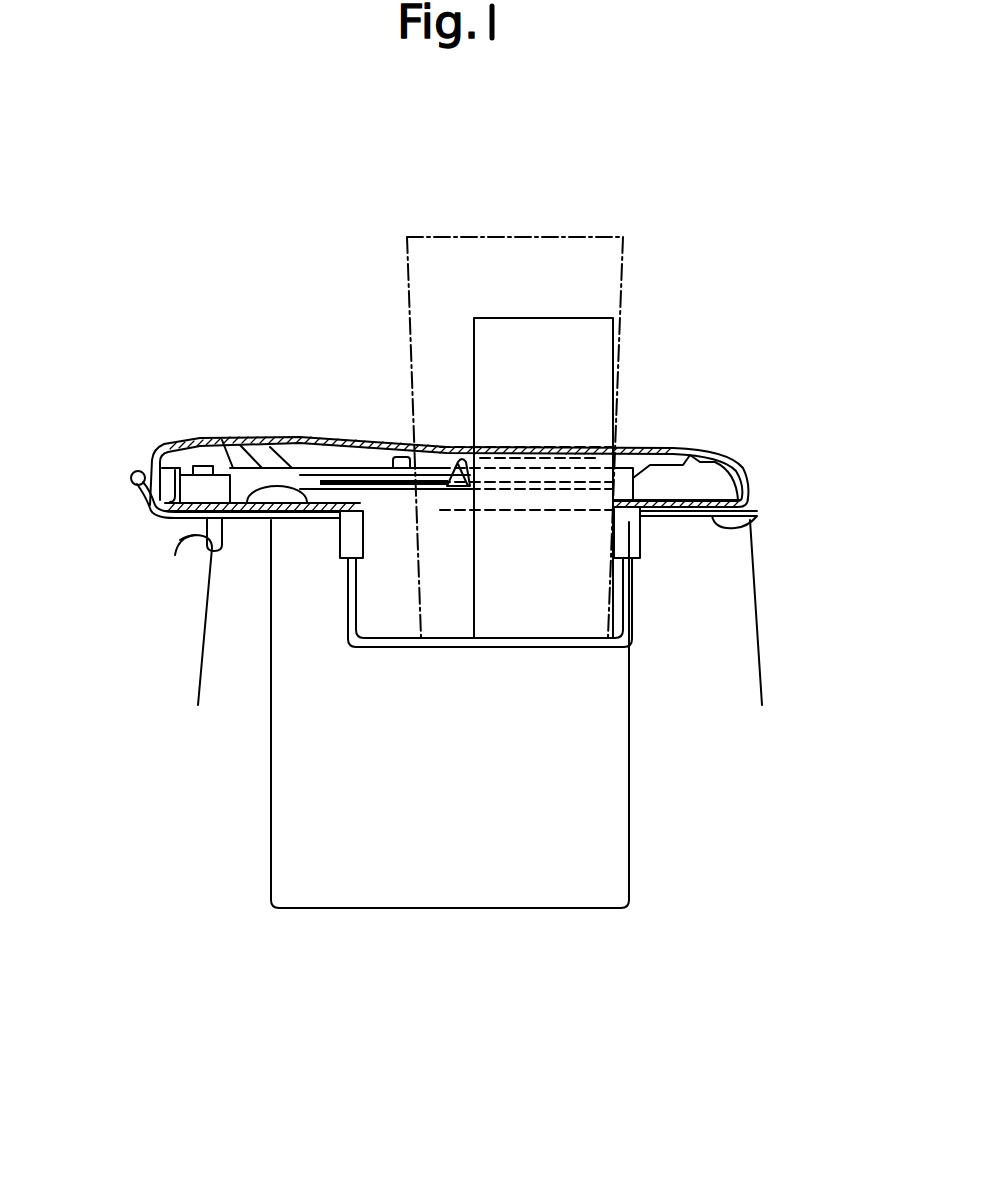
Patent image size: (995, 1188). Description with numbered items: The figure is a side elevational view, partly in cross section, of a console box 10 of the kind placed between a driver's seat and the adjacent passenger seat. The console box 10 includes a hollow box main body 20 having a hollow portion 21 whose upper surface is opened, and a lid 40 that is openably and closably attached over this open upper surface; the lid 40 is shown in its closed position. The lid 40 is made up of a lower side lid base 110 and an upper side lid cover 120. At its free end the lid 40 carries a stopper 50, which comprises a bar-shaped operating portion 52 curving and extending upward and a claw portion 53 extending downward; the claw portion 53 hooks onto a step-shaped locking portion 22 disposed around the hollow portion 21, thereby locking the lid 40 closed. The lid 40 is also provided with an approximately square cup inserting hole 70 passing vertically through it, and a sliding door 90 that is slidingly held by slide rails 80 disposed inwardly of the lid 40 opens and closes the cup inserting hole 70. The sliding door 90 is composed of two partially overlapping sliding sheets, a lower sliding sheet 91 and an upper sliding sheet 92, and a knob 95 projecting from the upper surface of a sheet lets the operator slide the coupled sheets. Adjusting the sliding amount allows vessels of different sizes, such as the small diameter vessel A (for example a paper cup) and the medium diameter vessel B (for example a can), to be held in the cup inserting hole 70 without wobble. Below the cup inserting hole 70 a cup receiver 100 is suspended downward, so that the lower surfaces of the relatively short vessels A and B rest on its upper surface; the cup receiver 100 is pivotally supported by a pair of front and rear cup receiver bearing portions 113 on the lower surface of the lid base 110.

The console box 10 is at (238, 210).
The box main body 20 is at (748, 620).
The hollow portion 21 is at (465, 886).
The locking portion 22 is at (232, 540).
The lid 40 is at (530, 493).
The stopper 50 is at (113, 492).
The operating portion 52 is at (132, 472).
The claw portion 53 is at (182, 540).
The cup inserting hole 70 is at (597, 445).
The slide rails 80 is at (222, 440).
The sliding door 90 is at (361, 406).
The lower sliding sheet 91 is at (308, 465).
The upper sliding sheet 92 is at (367, 465).
The knob 95 is at (462, 462).
The cup receiver 100 is at (549, 646).
The lid base 110 is at (516, 528).
The cup receiver bearing portions 113 is at (345, 538).
The lid cover 120 is at (748, 457).
The small diameter vessel A is at (613, 318).
The medium diameter vessel B is at (628, 236).